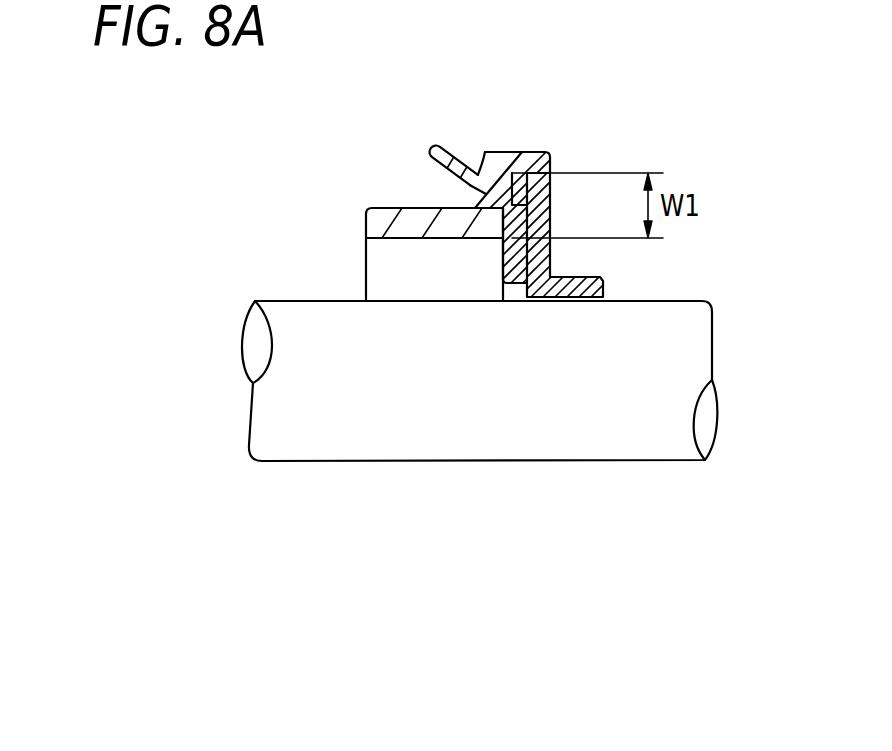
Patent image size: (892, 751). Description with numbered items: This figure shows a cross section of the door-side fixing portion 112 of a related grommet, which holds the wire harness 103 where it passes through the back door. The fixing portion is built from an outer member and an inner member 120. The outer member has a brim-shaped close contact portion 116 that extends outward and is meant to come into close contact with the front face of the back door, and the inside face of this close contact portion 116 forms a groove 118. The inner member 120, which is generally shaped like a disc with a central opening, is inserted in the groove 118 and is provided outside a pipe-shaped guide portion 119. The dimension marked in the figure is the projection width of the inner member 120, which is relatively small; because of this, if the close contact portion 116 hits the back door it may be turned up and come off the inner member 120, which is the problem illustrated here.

The wire harness 103 is at (623, 453).
The door-side fixing portion 112 is at (587, 112).
The close contact portion 116 is at (487, 151).
The groove 118 is at (535, 151).
The guide portion 119 is at (392, 208).
The inner member 120 is at (520, 200).